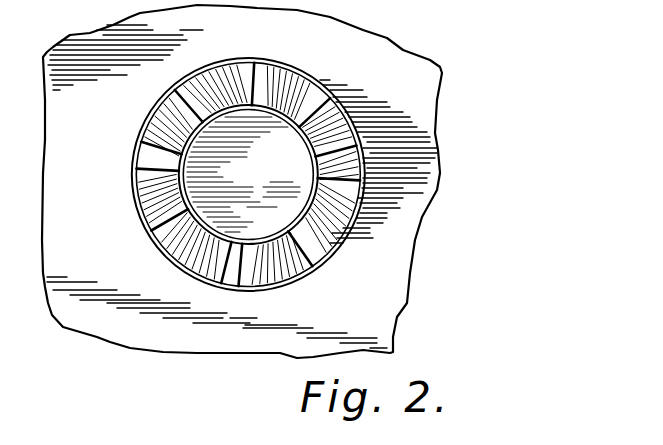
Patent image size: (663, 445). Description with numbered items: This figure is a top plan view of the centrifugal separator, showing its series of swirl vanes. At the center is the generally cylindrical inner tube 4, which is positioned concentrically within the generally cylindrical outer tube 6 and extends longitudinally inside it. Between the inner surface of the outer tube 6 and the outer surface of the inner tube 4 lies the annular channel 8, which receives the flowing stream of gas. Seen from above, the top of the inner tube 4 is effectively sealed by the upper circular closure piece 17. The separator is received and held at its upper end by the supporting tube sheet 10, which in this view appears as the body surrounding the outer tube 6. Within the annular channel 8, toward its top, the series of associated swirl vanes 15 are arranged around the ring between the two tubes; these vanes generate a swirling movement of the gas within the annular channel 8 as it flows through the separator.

The inner tube 4 is at (271, 233).
The outer tube 6 is at (278, 285).
The annular channel 8 is at (260, 72).
The supporting tube sheet 10 is at (103, 255).
The swirl vanes 15 is at (163, 122).
The upper circular closure piece 17 is at (288, 171).